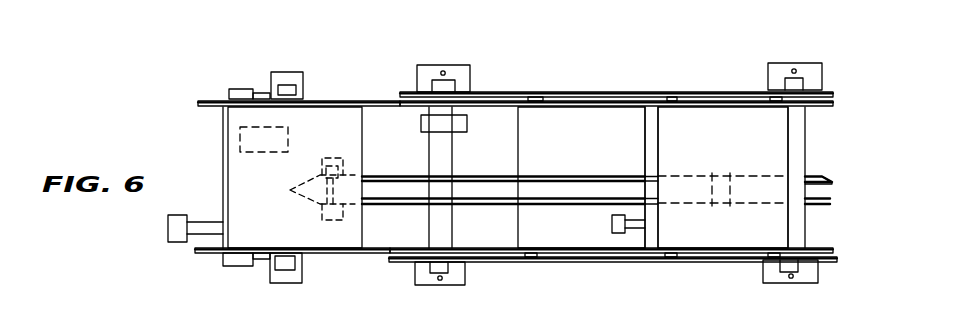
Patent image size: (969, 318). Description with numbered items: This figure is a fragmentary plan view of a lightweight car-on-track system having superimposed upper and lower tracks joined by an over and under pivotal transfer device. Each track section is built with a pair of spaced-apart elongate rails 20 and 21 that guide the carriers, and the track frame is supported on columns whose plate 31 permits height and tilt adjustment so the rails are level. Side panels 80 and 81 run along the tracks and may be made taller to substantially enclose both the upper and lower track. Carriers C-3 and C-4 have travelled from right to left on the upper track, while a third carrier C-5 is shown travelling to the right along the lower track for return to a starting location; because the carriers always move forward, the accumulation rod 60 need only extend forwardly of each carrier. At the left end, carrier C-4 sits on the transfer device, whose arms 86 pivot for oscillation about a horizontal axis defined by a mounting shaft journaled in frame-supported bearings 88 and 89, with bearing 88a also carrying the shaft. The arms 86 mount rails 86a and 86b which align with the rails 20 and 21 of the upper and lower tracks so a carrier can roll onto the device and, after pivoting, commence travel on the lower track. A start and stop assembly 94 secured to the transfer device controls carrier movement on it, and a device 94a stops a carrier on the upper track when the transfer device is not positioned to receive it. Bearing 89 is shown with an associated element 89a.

The rail 20 is at (580, 251).
The rail 21 is at (548, 103).
The plate 31 is at (780, 72).
The accumulation rod 60 is at (195, 228).
The side panel 80 is at (507, 92).
The side panel 81 is at (498, 263).
The arm 86 is at (264, 90).
The rail 86a is at (215, 99).
The rail 86b is at (213, 258).
The bearing 88 is at (292, 88).
The bearing 88a is at (283, 78).
The bearing 89 is at (296, 263).
The lower mounting block opening 89a is at (303, 284).
The start and stop assembly 94 is at (233, 128).
The device 94a is at (460, 118).
The carrier C-4 is at (345, 125).
The carrier C-5 is at (590, 125).
The carrier C-3 is at (683, 122).